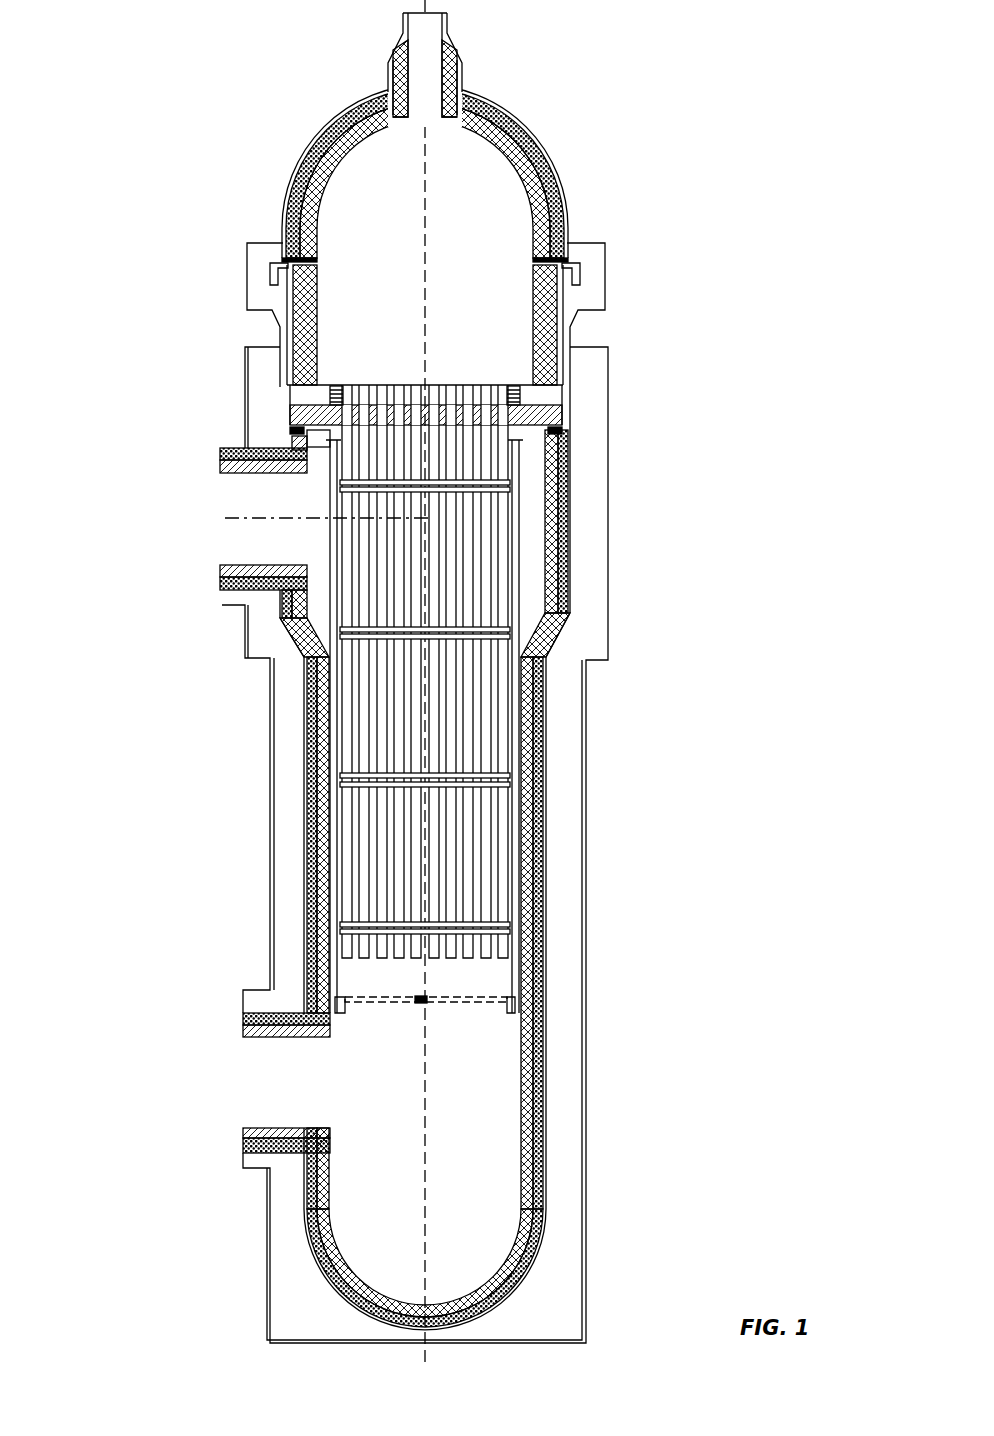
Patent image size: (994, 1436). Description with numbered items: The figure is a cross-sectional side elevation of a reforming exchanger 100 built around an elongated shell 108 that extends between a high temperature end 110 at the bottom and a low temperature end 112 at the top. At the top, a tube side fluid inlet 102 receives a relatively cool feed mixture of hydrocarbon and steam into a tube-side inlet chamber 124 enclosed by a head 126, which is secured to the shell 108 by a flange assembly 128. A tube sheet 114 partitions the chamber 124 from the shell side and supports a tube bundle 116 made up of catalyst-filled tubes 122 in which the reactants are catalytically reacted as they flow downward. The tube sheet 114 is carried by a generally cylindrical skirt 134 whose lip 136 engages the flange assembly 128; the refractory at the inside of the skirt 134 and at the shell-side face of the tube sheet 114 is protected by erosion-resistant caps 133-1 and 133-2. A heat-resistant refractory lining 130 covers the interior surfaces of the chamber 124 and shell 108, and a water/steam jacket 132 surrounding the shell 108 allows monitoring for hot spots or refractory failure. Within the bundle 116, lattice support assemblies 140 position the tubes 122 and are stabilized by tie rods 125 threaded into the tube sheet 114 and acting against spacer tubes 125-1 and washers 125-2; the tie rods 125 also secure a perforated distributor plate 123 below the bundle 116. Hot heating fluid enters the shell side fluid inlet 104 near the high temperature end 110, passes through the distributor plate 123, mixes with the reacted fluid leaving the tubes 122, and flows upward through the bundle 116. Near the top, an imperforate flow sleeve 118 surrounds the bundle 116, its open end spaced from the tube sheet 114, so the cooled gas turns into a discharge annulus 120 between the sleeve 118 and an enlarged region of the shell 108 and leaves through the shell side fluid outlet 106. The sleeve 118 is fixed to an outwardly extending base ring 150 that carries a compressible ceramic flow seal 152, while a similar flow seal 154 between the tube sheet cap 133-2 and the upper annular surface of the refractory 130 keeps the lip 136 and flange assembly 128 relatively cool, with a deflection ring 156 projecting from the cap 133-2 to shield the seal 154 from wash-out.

The reforming exchanger 100 is at (152, 52).
The tube side fluid inlet 102 is at (460, 72).
The shell side fluid inlet 104 is at (430, 1082).
The shell side fluid outlet 106 is at (245, 518).
The elongated shell 108 is at (548, 765).
The high temperature end 110 is at (548, 1078).
The low temperature end 112 is at (560, 430).
The tube sheet 114 is at (448, 395).
The tube bundle 116 is at (467, 677).
The flow sleeve 118 is at (565, 548).
The discharge annulus 120 is at (283, 600).
The catalyst-filled tubes 122 is at (300, 408).
The distributor plate 123 is at (420, 1004).
The tube-side inlet chamber 124 is at (412, 208).
The tie rods 125 is at (322, 915).
The spacer tubes 125-1 is at (325, 975).
The washers 125-2 is at (352, 996).
The head 126 is at (512, 112).
The flange assembly 128 is at (605, 256).
The refractory lining 130 is at (533, 222).
The water/steam jacket 132 is at (587, 926).
The erosion-resistant cap 133-1 is at (320, 302).
The tube sheet cap 133-2 is at (312, 448).
The cylindrical skirt 134 is at (565, 342).
The lip 136 is at (270, 270).
The lattice support assemblies 140 is at (485, 790).
The base ring 150 is at (525, 560).
The flow seal 152 is at (548, 658).
The flow seal 154 is at (292, 436).
The deflection ring 156 is at (560, 455).